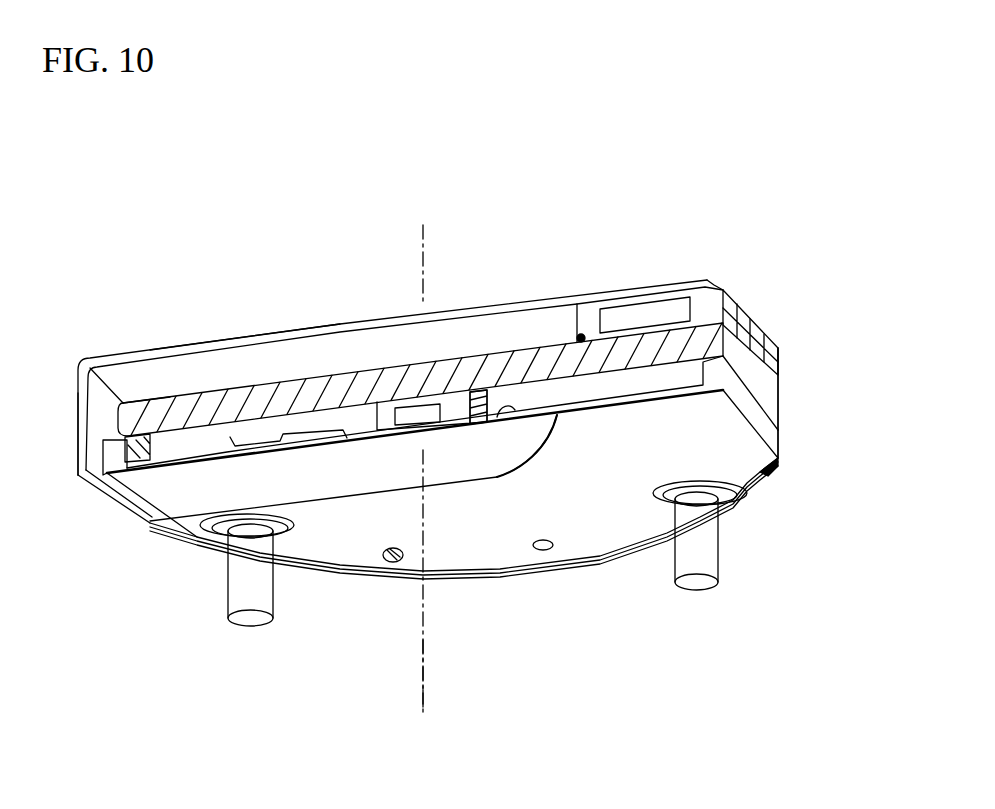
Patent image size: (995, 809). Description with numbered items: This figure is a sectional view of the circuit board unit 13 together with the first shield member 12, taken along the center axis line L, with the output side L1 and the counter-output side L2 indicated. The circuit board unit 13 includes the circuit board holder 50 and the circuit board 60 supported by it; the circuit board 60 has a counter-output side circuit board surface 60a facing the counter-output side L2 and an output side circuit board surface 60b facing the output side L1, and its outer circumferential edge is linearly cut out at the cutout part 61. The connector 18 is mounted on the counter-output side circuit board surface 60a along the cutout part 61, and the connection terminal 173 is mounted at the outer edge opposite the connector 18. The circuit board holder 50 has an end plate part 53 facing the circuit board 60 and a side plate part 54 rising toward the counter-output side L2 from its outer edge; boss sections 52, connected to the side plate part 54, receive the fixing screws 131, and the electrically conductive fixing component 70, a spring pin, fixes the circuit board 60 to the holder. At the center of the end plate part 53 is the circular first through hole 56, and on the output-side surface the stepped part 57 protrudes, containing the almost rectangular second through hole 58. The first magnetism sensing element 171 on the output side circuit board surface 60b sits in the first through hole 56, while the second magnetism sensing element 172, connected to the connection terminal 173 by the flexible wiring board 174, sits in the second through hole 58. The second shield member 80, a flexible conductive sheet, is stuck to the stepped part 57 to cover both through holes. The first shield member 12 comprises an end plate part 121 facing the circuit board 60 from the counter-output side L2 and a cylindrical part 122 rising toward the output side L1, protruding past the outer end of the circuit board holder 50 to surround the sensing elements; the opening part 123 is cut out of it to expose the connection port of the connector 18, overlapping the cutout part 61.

The first shield member 12 is at (57, 296).
The end plate part 121 is at (150, 350).
The cylindrical part 122 is at (78, 393).
The opening part 123 is at (710, 282).
The circuit board unit 13 is at (842, 398).
The connector 18 is at (712, 307).
The circuit board holder 50 is at (770, 433).
The boss sections 52 is at (193, 547).
The end plate part 53 is at (767, 467).
The side plate part 54 is at (748, 402).
The first through hole 56 is at (350, 437).
The stepped part 57 is at (570, 422).
The second through hole 58 is at (230, 443).
The circuit board 60 is at (773, 399).
The counter-output side circuit board surface 60a is at (533, 347).
The output side circuit board surface 60b is at (535, 382).
The cutout part 61 is at (757, 375).
The fixing component 70 is at (390, 556).
The second shield member 80 is at (320, 490).
The fixing screws 131 is at (233, 580).
The first magnetism sensing element 171 is at (453, 397).
The second magnetism sensing element 172 is at (177, 463).
The connection terminal 173 is at (167, 397).
The flexible wiring board 174 is at (123, 418).
The center axis line L is at (423, 665).
The output side L1 is at (421, 712).
The counter-output side L2 is at (421, 453).